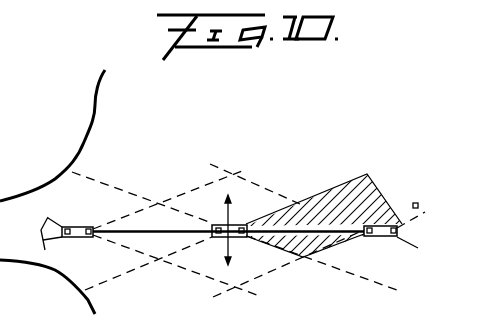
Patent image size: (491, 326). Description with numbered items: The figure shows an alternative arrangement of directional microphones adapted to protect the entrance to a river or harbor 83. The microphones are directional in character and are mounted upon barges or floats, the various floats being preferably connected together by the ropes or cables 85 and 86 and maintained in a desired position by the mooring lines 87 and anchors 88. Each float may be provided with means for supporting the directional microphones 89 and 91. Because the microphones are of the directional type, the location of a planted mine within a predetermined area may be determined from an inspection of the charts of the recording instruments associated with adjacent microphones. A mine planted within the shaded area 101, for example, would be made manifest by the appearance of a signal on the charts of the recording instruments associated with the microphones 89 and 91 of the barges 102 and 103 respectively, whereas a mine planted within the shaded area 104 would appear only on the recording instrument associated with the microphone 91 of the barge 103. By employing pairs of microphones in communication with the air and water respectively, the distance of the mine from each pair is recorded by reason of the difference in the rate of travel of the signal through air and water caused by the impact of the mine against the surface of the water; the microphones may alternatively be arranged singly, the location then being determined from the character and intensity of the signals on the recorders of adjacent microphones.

The river or harbor 83 is at (52, 192).
The rope or cable 85 is at (142, 233).
The rope or cable 86 is at (266, 226).
The mooring line 87 is at (63, 227).
The anchor 88 is at (44, 221).
The directional microphone 89 is at (80, 227).
The directional microphone 91 is at (91, 237).
The shaded area 101 is at (300, 211).
The barge 102 is at (375, 237).
The barge 103 is at (227, 238).
The shaded area 104 is at (373, 186).